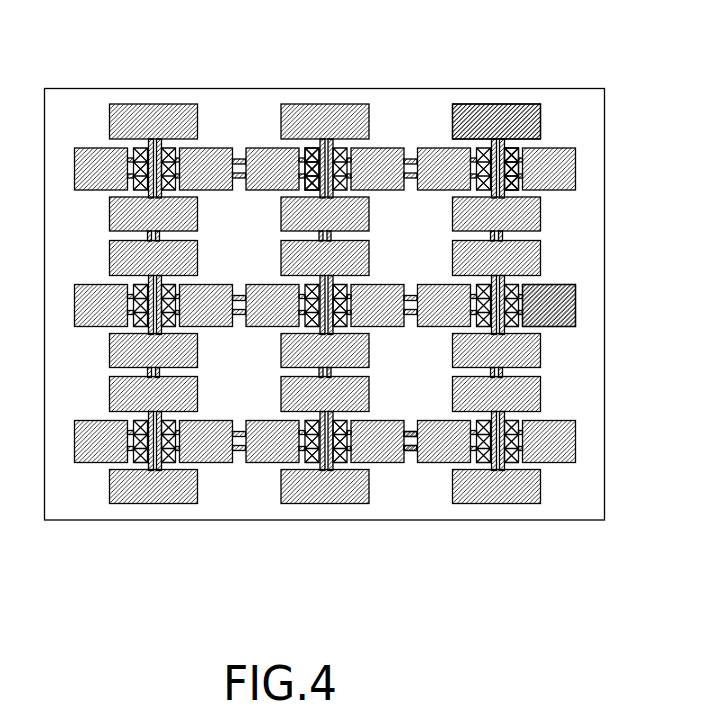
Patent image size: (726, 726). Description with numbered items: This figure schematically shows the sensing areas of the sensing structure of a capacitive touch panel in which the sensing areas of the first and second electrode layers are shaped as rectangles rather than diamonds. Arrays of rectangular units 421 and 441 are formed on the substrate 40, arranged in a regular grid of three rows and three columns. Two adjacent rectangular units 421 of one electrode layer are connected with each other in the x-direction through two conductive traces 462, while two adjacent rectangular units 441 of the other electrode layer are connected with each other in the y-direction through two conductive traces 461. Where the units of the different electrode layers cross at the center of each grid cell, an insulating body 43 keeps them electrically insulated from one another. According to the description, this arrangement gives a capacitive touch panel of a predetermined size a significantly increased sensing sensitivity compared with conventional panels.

The substrate 40 is at (592, 210).
The insulating body 43 is at (306, 165).
The rectangular unit 421 is at (574, 305).
The rectangular unit 441 is at (497, 106).
The conductive trace 461 is at (521, 157).
The conductive trace 462 is at (413, 448).